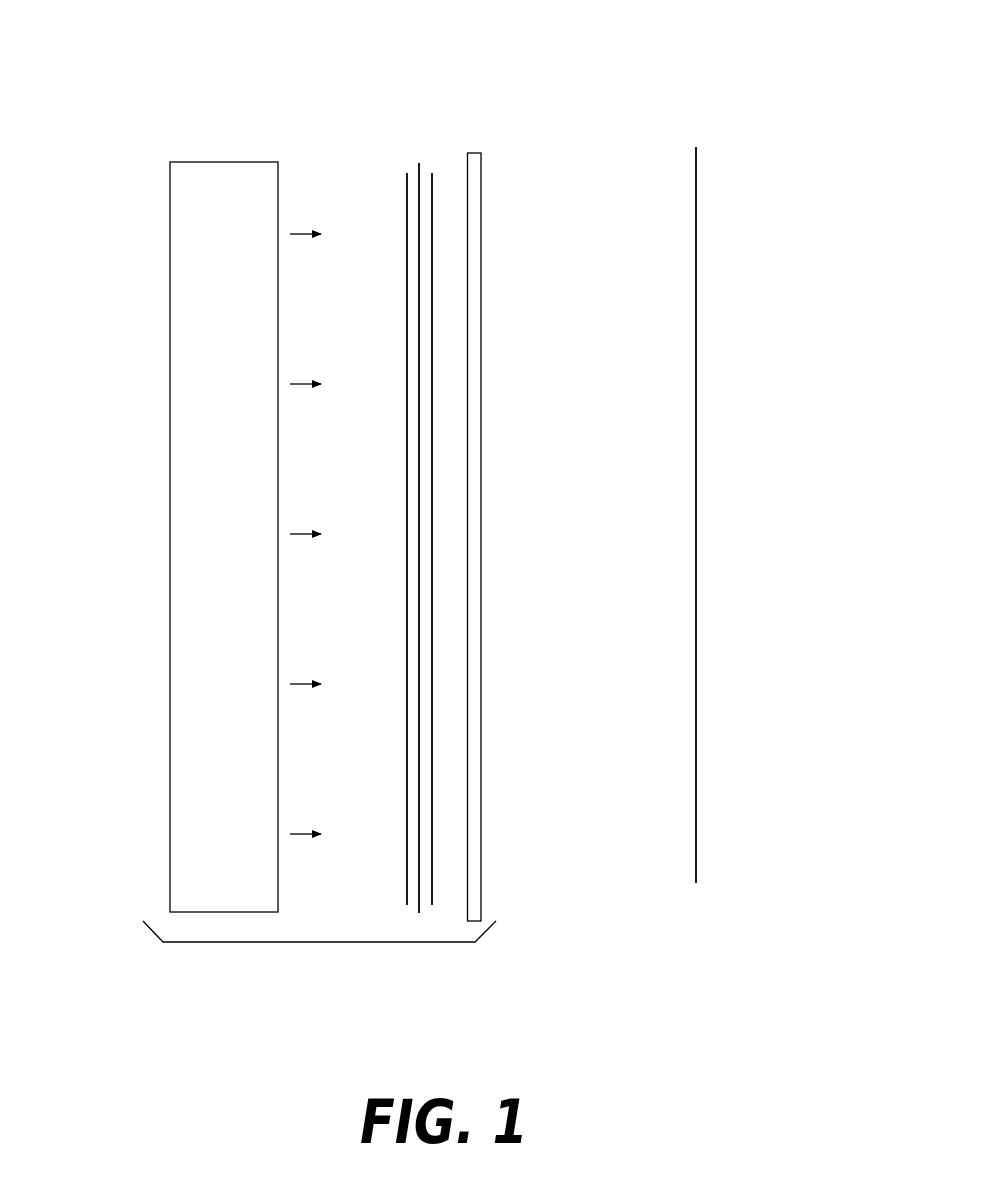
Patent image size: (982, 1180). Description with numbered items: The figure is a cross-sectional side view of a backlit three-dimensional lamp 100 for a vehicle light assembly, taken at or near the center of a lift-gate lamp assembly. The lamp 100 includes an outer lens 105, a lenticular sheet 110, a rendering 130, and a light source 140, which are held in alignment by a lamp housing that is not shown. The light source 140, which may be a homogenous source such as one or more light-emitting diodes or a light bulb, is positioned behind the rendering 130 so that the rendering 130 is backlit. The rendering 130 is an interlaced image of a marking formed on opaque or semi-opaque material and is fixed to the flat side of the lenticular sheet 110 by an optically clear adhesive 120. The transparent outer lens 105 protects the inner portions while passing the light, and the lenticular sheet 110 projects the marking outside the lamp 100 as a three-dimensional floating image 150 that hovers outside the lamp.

The backlit 3D lamp 100 is at (320, 943).
The outer lens 105 is at (490, 762).
The lenticular sheet 110 is at (442, 198).
The adhesive 120 is at (425, 158).
The rendering 130 is at (398, 158).
The light source 140 is at (158, 220).
The 3D floating image 150 is at (725, 273).